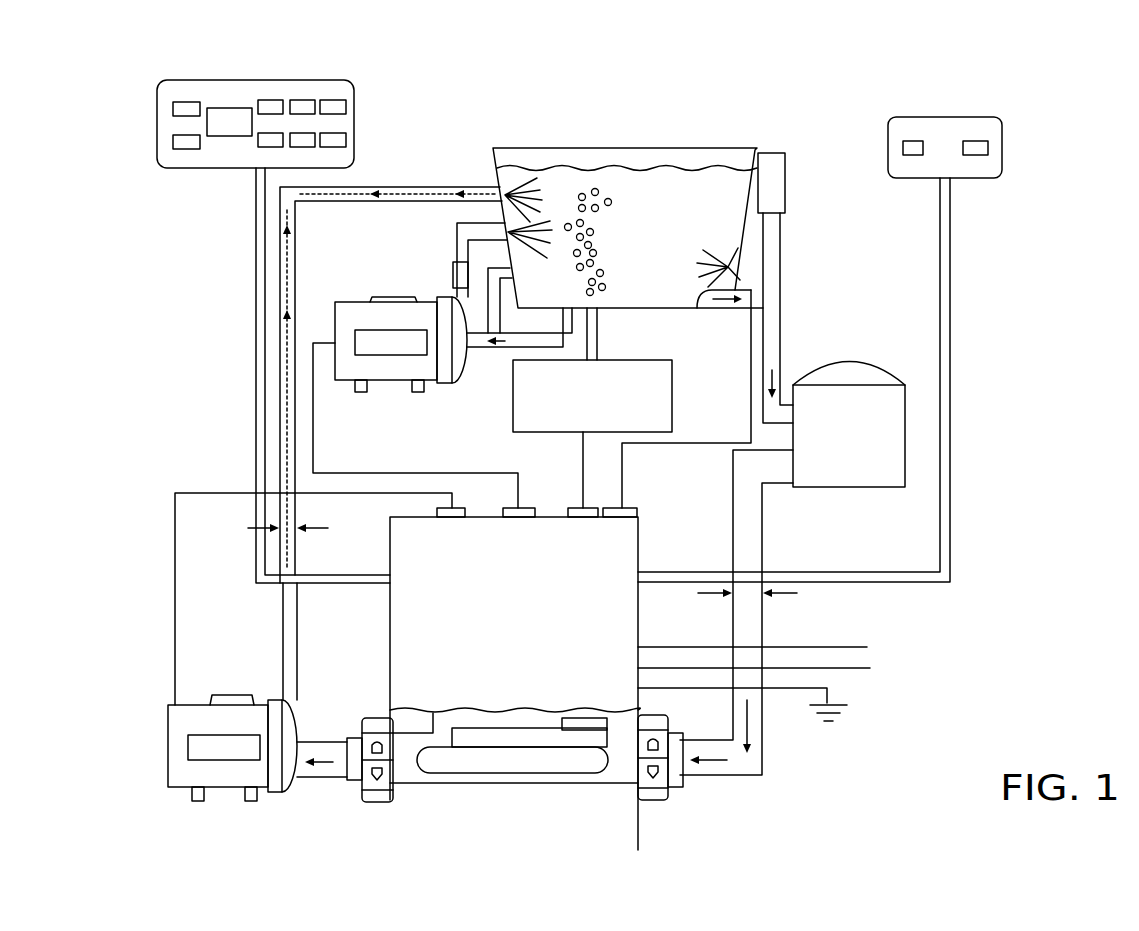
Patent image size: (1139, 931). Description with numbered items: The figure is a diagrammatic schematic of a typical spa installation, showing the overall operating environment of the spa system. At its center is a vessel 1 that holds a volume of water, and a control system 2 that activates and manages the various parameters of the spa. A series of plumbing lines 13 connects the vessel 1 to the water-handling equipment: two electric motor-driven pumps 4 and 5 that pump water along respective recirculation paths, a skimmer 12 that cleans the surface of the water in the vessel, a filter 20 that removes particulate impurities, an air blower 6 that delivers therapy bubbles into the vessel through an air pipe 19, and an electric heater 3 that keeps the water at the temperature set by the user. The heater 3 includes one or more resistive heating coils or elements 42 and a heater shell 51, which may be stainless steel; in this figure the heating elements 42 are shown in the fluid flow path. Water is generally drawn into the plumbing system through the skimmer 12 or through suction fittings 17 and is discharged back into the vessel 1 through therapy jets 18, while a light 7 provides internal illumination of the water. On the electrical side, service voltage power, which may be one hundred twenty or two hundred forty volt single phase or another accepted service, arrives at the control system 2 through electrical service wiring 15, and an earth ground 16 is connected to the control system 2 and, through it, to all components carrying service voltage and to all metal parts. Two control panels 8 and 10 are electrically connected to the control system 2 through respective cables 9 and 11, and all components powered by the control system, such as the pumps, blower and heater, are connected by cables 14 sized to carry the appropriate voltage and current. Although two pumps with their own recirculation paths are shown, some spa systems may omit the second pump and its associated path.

The vessel 1 is at (673, 140).
The control system 2 is at (640, 535).
The electric heater 3 is at (547, 788).
The pump 4 is at (287, 786).
The pump 5 is at (457, 377).
The air blower 6 is at (672, 386).
The light 7 is at (742, 263).
The control panel 8 is at (355, 110).
The cable 9 is at (256, 290).
The control panel 10 is at (1002, 148).
The cable 11 is at (950, 285).
The skimmer 12 is at (785, 186).
The plumbing lines 13 is at (428, 188).
The cables 14 is at (518, 485).
The electrical service wiring 15 is at (800, 667).
The earth ground 16 is at (787, 689).
The suction fittings 17 is at (514, 276).
The therapy jets 18 is at (505, 186).
The air pipe 19 is at (598, 332).
The filter 20 is at (856, 362).
The resistive heating elements 42 is at (448, 783).
The heater shell 51 is at (513, 785).